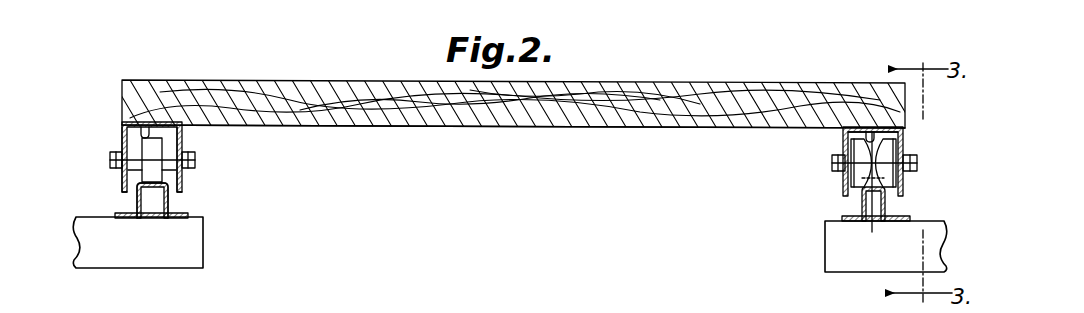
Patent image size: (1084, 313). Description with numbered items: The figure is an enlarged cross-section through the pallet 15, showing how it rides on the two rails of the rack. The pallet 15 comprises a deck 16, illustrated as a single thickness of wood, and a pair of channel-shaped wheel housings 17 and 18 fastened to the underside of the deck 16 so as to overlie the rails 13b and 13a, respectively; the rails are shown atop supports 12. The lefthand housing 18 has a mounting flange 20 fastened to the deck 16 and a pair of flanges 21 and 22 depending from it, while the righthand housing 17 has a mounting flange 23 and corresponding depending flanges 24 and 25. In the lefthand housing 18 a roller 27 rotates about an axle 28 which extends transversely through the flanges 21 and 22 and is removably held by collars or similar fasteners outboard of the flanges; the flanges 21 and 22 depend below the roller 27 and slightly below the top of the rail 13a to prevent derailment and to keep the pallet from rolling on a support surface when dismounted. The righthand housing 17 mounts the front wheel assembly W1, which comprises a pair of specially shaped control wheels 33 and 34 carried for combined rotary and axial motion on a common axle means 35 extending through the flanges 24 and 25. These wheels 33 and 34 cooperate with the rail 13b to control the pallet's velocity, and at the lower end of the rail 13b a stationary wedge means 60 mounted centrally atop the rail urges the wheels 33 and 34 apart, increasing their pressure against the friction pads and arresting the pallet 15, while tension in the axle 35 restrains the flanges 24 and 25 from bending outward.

The support post 12 is at (157, 262).
The rail 13a is at (137, 199).
The rail 13b is at (862, 207).
The pallet 15 is at (415, 117).
The deck 16 is at (668, 90).
The wheel housing 17 is at (905, 137).
The wheel housing 18 is at (122, 138).
The mounting flange 20 is at (145, 128).
The depending flange 21 is at (122, 182).
The depending flange 22 is at (182, 140).
The mounting flange 23 is at (872, 138).
The depending flange 24 is at (903, 196).
The depending flange 25 is at (847, 135).
The roller 27 is at (168, 202).
The axle 28 is at (195, 160).
The control wheel 33 is at (858, 170).
The control wheel 34 is at (888, 160).
The axle means 35 is at (832, 163).
The wedge means 60 is at (869, 195).
The wheel assembly W1 is at (775, 202).